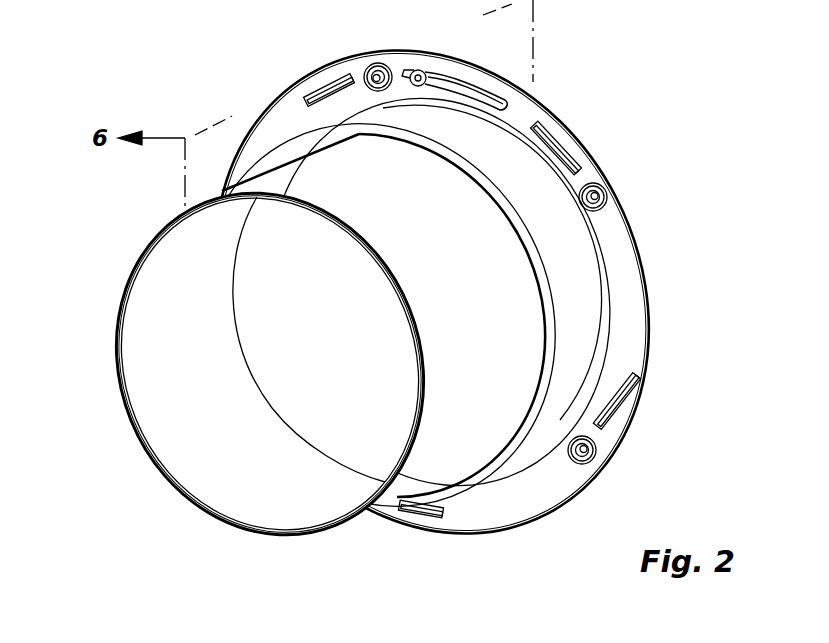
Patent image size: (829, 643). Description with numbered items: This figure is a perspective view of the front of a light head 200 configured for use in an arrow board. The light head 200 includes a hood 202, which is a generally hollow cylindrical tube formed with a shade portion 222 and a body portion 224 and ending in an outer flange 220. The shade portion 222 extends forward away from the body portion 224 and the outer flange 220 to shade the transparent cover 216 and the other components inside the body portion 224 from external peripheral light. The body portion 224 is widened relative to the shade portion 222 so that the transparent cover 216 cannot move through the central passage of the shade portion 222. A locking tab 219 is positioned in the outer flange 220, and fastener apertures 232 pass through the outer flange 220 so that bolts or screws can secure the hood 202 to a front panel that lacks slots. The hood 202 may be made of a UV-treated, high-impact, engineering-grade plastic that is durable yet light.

The light head 200 is at (163, 85).
The hood 202 is at (300, 520).
The transparent cover 216 is at (267, 365).
The locking tab 219 is at (470, 70).
The outer flange 220 is at (627, 300).
The shade portion 222 is at (188, 487).
The body portion 224 is at (532, 446).
The fastener apertures 232 is at (362, 72).